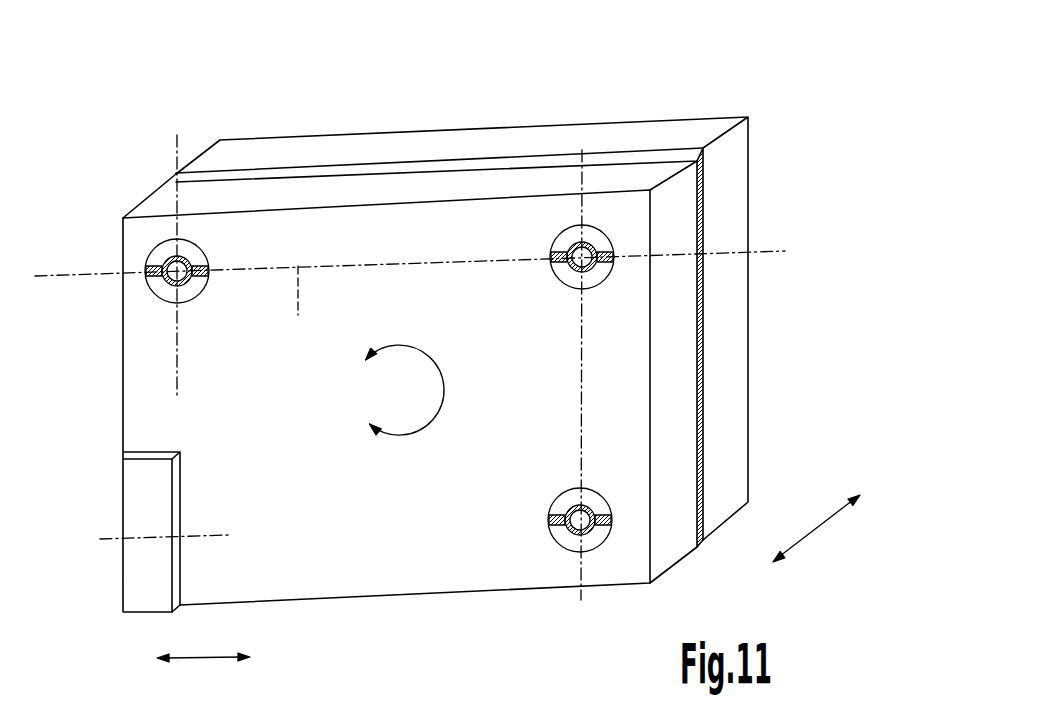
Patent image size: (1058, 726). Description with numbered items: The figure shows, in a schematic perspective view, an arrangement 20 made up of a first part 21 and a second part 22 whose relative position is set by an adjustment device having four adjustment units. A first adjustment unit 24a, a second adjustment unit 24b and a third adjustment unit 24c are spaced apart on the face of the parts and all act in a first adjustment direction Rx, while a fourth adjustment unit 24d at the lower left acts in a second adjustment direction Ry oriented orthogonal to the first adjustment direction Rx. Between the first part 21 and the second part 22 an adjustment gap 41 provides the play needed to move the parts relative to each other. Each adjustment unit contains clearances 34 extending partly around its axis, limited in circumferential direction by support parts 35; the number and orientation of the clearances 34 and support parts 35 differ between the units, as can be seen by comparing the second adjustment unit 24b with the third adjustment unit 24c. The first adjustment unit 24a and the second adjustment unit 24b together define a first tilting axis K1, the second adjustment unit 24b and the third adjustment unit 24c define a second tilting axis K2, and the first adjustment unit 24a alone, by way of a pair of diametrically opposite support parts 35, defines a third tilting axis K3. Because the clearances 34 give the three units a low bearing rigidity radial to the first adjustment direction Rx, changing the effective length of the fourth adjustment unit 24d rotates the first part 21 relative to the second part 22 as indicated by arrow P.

The arrangement 20 is at (783, 100).
The first part 21 is at (310, 192).
The second part 22 is at (637, 127).
The first adjustment unit 24a is at (138, 240).
The second adjustment unit 24b is at (623, 227).
The third adjustment unit 24c is at (554, 556).
The fourth adjustment unit 24d is at (105, 553).
The clearance 34 is at (205, 240).
The support part 35 is at (183, 235).
The adjustment gap 41 is at (698, 370).
The first tilting axis K1 is at (298, 315).
The second tilting axis K2 is at (578, 350).
The third tilting axis K3 is at (180, 143).
The arrow P is at (441, 405).
The first adjustment direction Rx is at (813, 532).
The second adjustment direction Ry is at (210, 658).